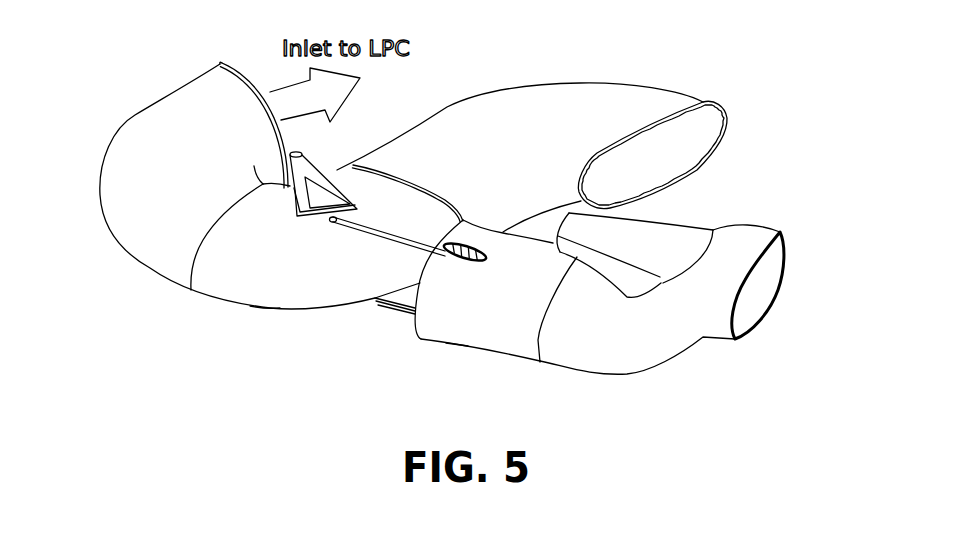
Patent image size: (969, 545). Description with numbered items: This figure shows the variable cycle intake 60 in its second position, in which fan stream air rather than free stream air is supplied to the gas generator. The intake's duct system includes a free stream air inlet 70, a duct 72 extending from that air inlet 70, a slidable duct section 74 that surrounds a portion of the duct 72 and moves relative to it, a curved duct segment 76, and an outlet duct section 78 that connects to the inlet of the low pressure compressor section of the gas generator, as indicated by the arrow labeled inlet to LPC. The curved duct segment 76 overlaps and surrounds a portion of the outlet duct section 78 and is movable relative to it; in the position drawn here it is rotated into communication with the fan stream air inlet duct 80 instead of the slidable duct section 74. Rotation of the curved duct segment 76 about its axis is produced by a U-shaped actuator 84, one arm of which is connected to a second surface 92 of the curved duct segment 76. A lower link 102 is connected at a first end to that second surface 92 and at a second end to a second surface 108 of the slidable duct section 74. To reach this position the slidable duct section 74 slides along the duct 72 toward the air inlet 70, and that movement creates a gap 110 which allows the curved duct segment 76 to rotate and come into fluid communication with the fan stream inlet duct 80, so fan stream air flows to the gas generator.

The variable cycle intake 60 is at (758, 170).
The free stream air inlet 70 is at (784, 245).
The duct 72 is at (600, 327).
The slidable duct section 74 is at (506, 359).
The curved duct segment 76 is at (247, 306).
The outlet duct section 78 is at (162, 100).
The fan stream air inlet duct 80 is at (481, 94).
The U-shaped actuator 84 is at (323, 162).
The second surface 92 is at (265, 308).
The lower link 102 is at (388, 302).
The second surface 108 is at (457, 345).
The gap 110 is at (353, 308).